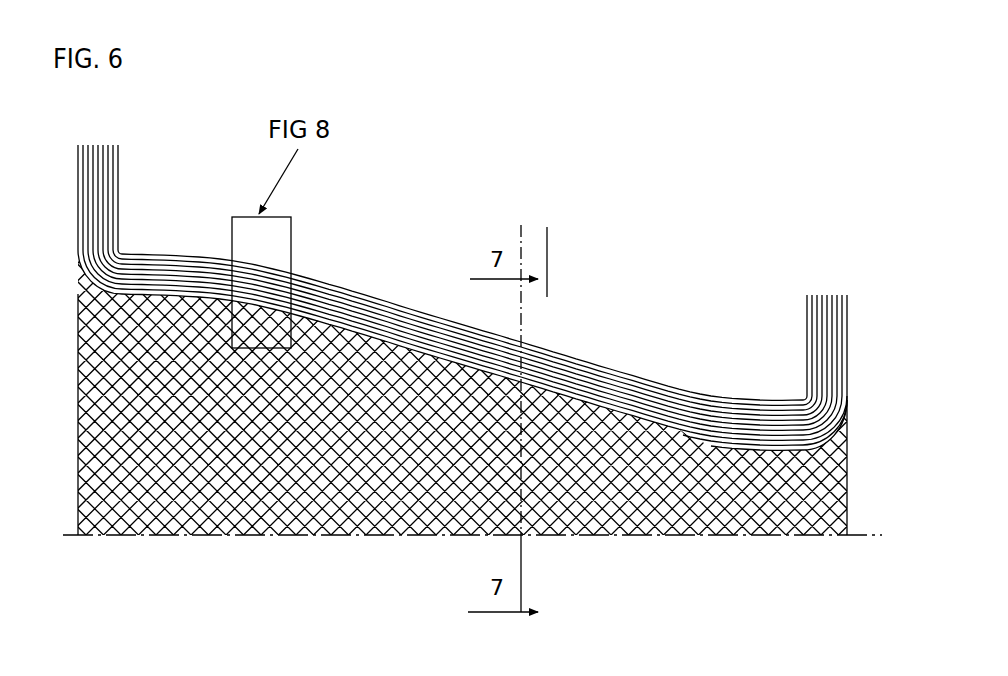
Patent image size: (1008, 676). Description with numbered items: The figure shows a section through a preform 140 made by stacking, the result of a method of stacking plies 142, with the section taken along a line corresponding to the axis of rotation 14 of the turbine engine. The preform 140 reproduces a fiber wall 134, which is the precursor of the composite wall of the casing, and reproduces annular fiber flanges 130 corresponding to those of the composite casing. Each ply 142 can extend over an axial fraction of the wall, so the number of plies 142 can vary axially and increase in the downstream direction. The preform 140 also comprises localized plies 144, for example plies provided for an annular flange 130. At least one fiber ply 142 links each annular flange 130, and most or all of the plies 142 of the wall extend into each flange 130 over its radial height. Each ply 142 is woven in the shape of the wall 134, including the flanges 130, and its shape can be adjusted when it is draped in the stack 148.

The axis of rotation 14 is at (392, 535).
The annular flange 130 is at (133, 188).
The fiber wall 134 is at (237, 480).
The preform 140 is at (462, 253).
The ply 142 is at (340, 303).
The localized ply 144 is at (697, 403).
The stack 148 is at (605, 289).